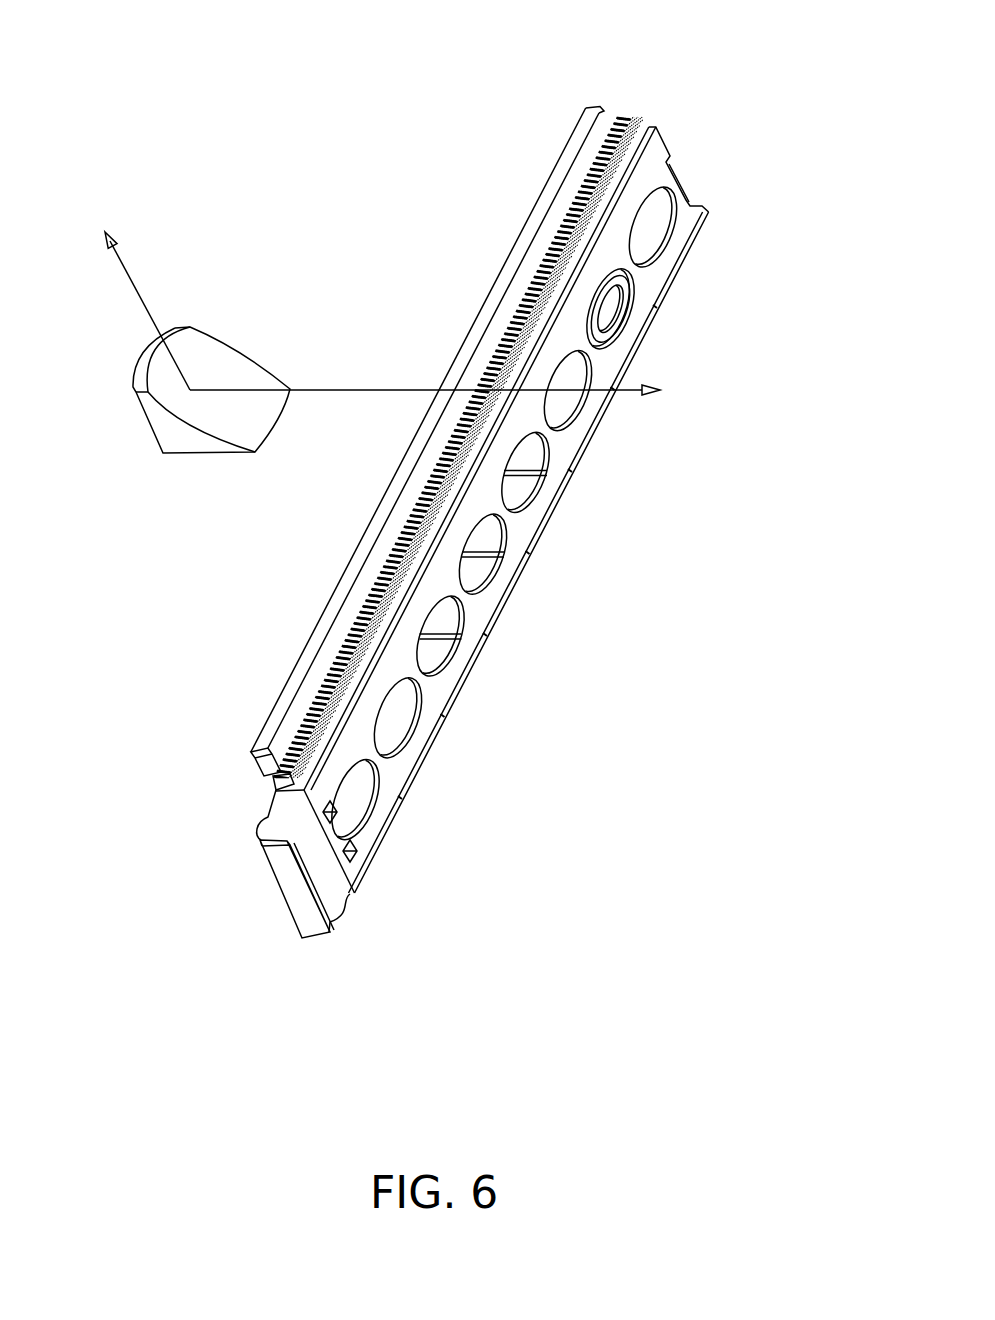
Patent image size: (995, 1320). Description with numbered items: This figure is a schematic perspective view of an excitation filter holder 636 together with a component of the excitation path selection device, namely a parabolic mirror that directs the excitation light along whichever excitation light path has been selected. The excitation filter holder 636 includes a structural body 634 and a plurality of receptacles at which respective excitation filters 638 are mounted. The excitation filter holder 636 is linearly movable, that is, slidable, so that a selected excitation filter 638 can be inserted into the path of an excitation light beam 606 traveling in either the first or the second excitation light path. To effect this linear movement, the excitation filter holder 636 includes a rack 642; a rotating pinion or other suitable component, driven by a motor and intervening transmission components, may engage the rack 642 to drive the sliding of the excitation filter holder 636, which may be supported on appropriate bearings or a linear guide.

The excitation filter holder 636 is at (740, 179).
The structural body 634 is at (292, 895).
The rack 642 is at (630, 116).
The excitation filters 638 is at (577, 432).
The excitation light beam 606 is at (336, 389).